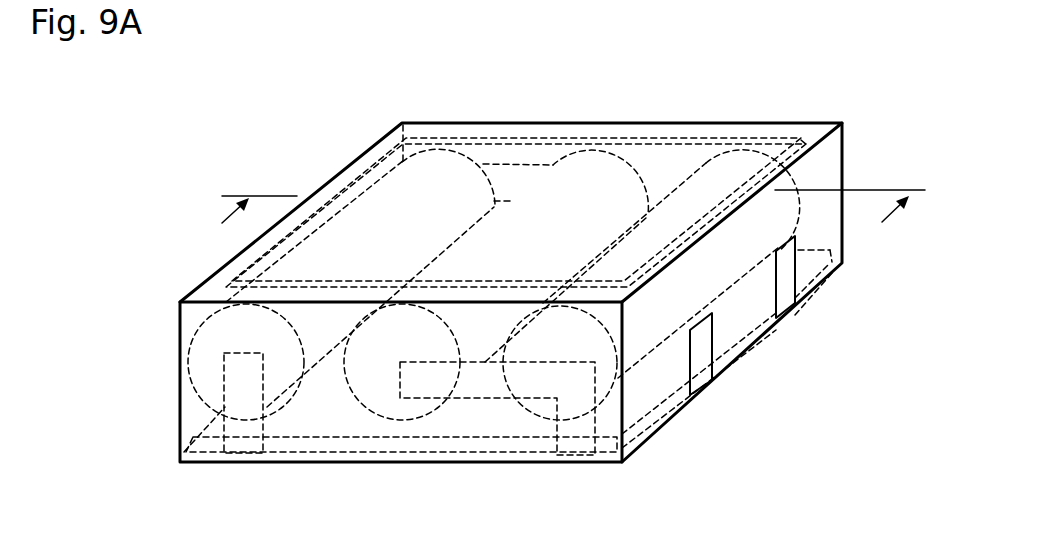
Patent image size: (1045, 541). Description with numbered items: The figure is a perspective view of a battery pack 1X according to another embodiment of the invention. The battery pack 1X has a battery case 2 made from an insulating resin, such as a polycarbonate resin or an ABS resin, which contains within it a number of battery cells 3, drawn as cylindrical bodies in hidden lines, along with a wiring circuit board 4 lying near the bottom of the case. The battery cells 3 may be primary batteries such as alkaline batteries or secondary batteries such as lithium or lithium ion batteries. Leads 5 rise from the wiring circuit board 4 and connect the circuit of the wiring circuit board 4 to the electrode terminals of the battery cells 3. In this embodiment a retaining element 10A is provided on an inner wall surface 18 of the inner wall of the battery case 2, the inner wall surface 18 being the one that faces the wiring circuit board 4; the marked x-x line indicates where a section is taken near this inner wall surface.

The battery pack 1X is at (184, 92).
The battery case 2 is at (342, 172).
The battery cells 3 is at (181, 334).
The wiring circuit board 4 is at (184, 443).
The leads 5 is at (247, 455).
The retaining element 10A is at (795, 142).
The inner wall surface 18 is at (810, 152).